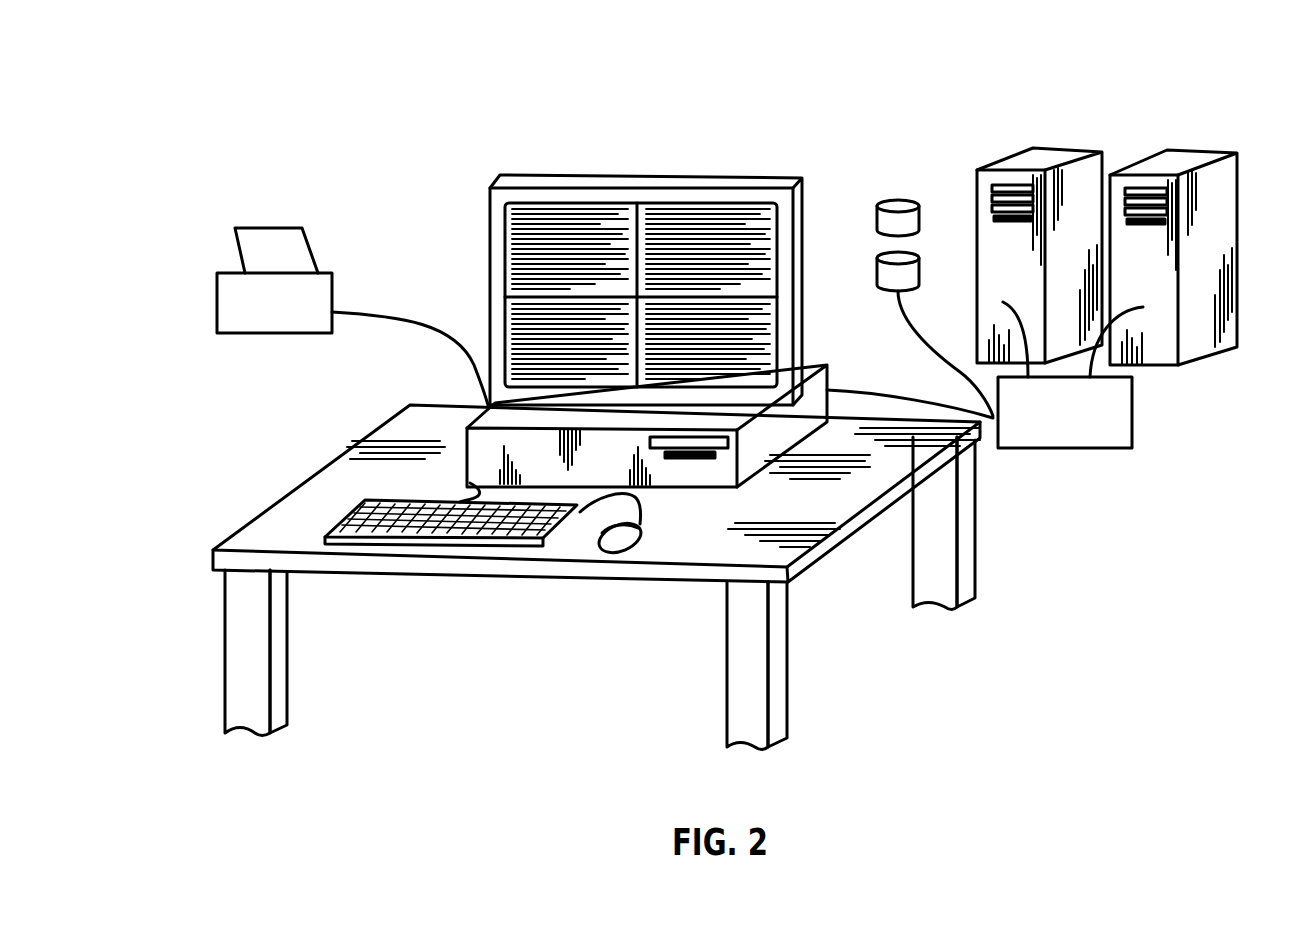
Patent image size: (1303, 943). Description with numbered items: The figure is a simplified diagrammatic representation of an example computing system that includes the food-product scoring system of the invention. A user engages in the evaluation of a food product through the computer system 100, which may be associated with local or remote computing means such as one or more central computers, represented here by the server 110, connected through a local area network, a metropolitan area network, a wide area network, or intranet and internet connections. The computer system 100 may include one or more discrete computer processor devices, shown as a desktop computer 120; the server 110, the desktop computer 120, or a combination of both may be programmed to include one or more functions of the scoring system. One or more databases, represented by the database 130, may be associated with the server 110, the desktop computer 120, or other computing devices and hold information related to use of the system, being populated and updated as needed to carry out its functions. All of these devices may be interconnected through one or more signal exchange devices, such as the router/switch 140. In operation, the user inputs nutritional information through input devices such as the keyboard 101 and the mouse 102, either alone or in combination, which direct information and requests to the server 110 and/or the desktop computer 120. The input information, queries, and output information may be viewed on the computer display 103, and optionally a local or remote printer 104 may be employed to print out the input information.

The computer system 100 is at (505, 101).
The keyboard 101 is at (352, 503).
The mouse 102 is at (605, 553).
The computer display 103 is at (657, 205).
The printer 104 is at (217, 302).
The server 110 is at (1160, 157).
The desktop computer 120 is at (470, 408).
The database 130 is at (893, 200).
The router/switch 140 is at (1132, 392).